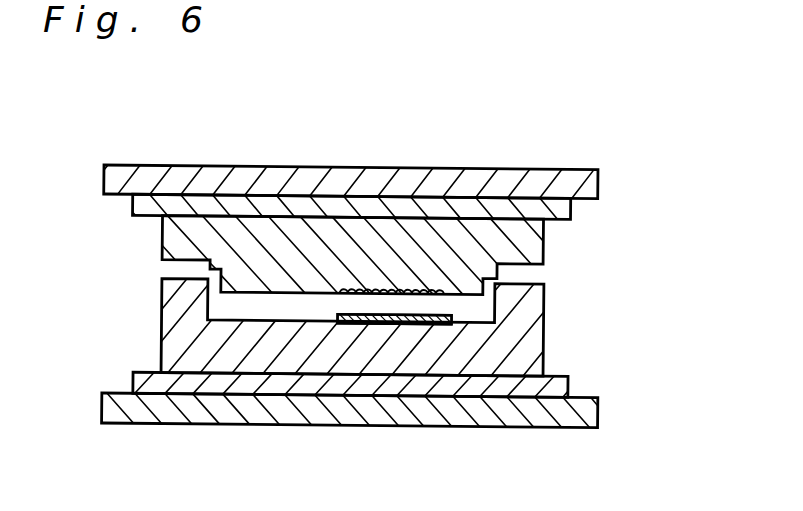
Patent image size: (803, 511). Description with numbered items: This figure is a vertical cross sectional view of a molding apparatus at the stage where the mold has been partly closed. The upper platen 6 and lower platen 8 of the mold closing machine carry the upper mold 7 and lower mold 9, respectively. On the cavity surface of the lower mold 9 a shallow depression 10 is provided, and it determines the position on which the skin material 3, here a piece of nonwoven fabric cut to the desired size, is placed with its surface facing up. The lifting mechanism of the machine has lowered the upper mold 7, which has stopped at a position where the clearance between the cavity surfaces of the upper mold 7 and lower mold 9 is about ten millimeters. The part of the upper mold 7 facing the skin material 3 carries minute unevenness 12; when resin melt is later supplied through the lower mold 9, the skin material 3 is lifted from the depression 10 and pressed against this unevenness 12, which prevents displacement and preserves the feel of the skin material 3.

The upper platen 6 is at (592, 182).
The upper mold 7 is at (542, 238).
The minute unevenness 12 is at (440, 290).
The lower mold 9 is at (525, 342).
The lower platen 8 is at (583, 410).
The skin material 3 is at (440, 323).
The shallow depression 10 is at (375, 323).